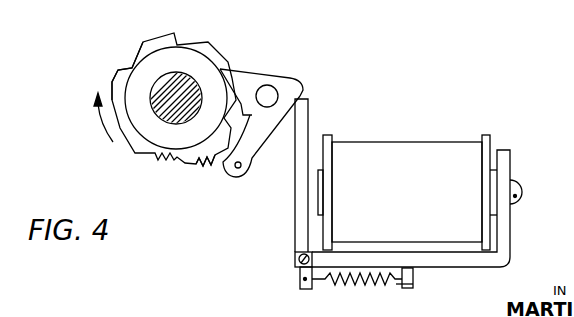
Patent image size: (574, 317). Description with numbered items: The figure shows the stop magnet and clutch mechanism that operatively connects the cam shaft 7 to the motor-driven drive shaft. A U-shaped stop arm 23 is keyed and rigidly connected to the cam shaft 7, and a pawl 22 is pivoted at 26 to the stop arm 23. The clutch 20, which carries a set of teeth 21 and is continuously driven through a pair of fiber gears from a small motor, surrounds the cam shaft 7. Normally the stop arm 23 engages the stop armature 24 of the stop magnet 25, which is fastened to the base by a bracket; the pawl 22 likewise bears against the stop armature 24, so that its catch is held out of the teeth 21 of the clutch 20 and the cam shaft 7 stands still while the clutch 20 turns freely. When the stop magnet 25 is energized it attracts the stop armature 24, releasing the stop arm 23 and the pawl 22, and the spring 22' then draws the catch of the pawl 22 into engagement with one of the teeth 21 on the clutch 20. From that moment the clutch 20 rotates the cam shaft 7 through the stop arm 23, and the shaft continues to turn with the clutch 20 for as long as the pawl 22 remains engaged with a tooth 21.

The cam shaft 7 is at (178, 78).
The clutch 20 is at (145, 131).
The teeth 21 is at (126, 66).
The pawl 22 is at (261, 138).
The spring 22' is at (198, 174).
The stop arm 23 is at (237, 73).
The stop armature 24 is at (297, 201).
The stop magnet 25 is at (397, 153).
The pivot 26 is at (269, 90).